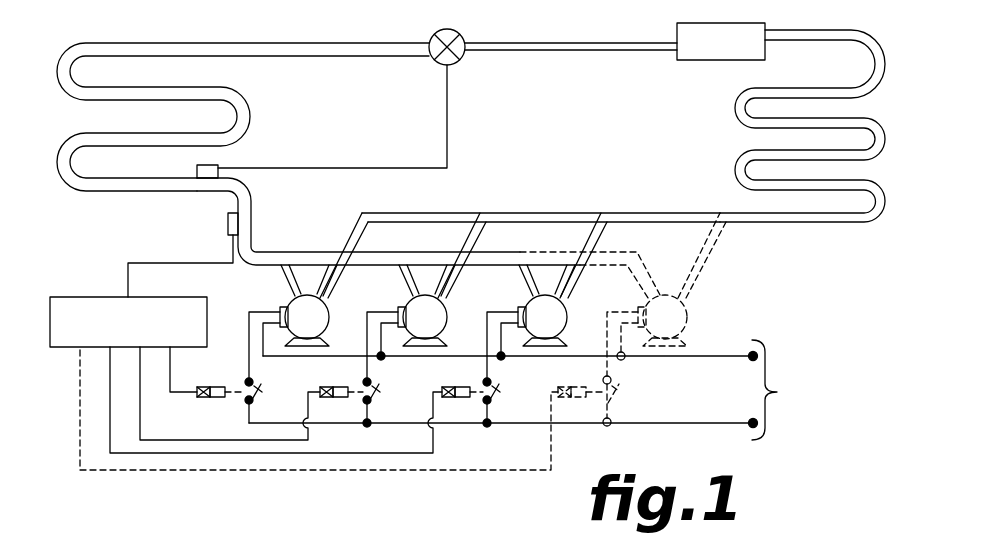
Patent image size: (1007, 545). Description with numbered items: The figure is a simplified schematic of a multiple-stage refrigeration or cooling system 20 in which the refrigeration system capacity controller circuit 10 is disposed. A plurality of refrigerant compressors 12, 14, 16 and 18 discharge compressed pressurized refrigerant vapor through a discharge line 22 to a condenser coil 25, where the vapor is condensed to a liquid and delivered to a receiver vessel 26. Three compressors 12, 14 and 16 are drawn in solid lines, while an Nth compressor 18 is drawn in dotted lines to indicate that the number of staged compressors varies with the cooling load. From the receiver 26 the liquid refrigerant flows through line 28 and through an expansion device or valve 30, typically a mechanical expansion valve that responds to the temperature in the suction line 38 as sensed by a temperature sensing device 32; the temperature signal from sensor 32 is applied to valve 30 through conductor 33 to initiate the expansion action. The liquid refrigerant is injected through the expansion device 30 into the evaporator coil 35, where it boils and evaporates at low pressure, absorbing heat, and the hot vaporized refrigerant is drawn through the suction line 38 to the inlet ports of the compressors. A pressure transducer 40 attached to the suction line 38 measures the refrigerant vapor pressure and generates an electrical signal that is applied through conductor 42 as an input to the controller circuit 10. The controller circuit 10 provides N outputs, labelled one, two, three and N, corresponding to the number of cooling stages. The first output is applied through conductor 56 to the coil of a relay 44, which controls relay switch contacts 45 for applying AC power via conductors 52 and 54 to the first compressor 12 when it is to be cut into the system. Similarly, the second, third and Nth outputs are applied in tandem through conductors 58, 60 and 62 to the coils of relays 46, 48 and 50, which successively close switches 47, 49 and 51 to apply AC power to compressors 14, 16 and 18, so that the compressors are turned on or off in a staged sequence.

The capacity controller circuit 10 is at (57, 297).
The first compressor 12 is at (327, 305).
The second compressor 14 is at (446, 305).
The third compressor 16 is at (566, 304).
The Nth compressor 18 is at (687, 298).
The multiple-stage refrigeration or cooling system 20 is at (569, 38).
The discharge line 22 is at (545, 212).
The condenser coil 25 is at (866, 118).
The receiver vessel 26 is at (767, 24).
The liquid line 28 is at (517, 51).
The expansion valve 30 is at (433, 36).
The temperature sensing device 32 is at (219, 166).
The conductor 33 is at (447, 112).
The evaporator coil 35 is at (65, 51).
The suction line 38 is at (252, 222).
The pressure transducer 40 is at (227, 230).
The conductor 42 is at (128, 268).
The relay 44 is at (213, 387).
The relay switch contacts 45 is at (253, 400).
The relay 46 is at (324, 387).
The switch 47 is at (375, 403).
The relay 48 is at (445, 387).
The switch 49 is at (495, 403).
The relay 50 is at (573, 385).
The switch 51 is at (613, 396).
The AC power conductor 52 is at (723, 357).
The AC power conductor 54 is at (722, 422).
The conductor 56 is at (181, 393).
The conductor 58 is at (173, 441).
The conductor 60 is at (122, 454).
The conductor 62 is at (80, 448).